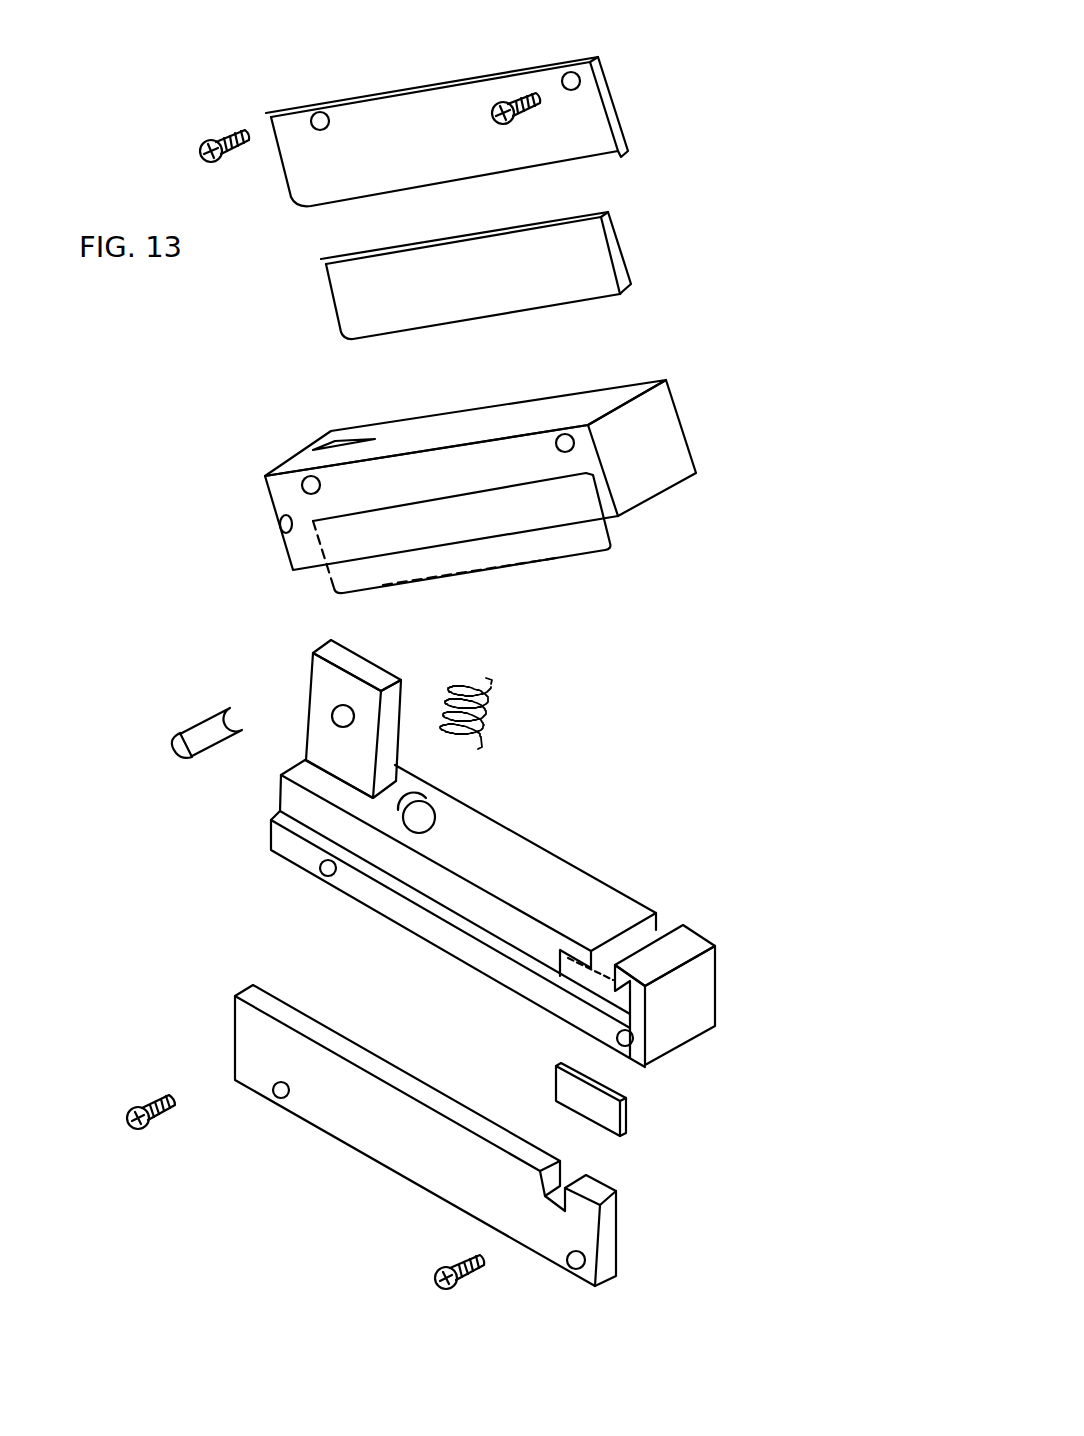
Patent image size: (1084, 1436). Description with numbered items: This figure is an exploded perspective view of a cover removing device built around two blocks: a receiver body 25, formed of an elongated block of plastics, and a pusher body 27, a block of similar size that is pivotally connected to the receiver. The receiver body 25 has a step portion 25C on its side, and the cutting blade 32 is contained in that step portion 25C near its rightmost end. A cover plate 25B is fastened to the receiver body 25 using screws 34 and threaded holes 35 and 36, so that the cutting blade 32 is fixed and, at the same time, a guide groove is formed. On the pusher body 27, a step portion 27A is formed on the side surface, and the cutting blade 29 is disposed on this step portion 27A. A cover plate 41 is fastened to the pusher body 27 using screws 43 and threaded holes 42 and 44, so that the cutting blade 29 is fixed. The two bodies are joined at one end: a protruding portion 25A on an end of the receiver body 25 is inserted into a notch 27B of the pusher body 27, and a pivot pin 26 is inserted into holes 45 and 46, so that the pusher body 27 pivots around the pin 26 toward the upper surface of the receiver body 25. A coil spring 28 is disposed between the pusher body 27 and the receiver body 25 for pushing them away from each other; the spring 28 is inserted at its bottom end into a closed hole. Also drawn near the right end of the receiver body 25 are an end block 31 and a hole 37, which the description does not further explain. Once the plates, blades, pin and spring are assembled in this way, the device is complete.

The cover plate 41 is at (575, 121).
The threaded holes 42 is at (303, 110).
The screws 43 is at (205, 132).
The cutting blade 29 is at (580, 251).
The pusher body 27 is at (468, 465).
The step portion 27A is at (503, 502).
The notch 27B is at (324, 423).
The threaded holes 44 is at (298, 473).
The hole 45 is at (272, 518).
The receiver body 25 is at (476, 829).
The protruding portion 25A is at (325, 643).
The cover plate 25B is at (375, 1133).
The step portion 25C is at (425, 887).
The pivot pin 26 is at (166, 729).
The coil spring 28 is at (482, 690).
The end block 31 is at (640, 922).
The cutting blade 32 is at (598, 1108).
The screws 34 is at (118, 1107).
The threaded holes 35 is at (265, 1085).
The threaded holes 36 is at (312, 860).
The spring hole 37 is at (415, 803).
The hole 46 is at (327, 695).